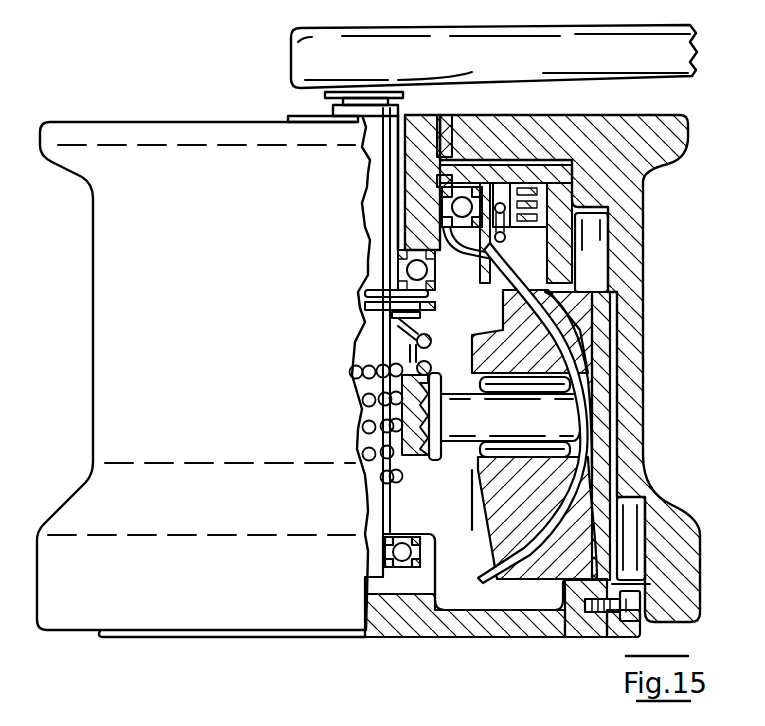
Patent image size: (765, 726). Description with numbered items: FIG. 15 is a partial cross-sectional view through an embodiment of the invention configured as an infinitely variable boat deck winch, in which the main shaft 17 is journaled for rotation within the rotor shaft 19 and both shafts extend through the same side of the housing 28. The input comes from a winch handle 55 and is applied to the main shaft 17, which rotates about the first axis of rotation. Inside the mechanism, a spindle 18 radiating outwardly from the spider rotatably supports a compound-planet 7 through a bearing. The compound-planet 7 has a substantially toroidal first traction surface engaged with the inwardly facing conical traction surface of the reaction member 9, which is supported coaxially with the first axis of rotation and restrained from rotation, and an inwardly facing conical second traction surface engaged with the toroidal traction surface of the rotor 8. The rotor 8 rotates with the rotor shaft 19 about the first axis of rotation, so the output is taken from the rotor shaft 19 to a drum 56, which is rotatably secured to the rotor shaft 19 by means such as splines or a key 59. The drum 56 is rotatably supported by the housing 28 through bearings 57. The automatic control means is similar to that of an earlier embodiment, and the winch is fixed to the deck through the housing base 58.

The compound-planet 7 is at (549, 514).
The rotor 8 is at (476, 290).
The reaction member 9 is at (543, 247).
The main shaft 17 is at (378, 165).
The spindle 18 is at (572, 403).
The rotor shaft 19 is at (418, 203).
The housing 28 is at (595, 325).
The winch handle 55 is at (302, 60).
The drum 56 is at (655, 143).
The bearings 57 is at (598, 275).
The housing base 58 is at (411, 640).
The key 59 is at (448, 133).